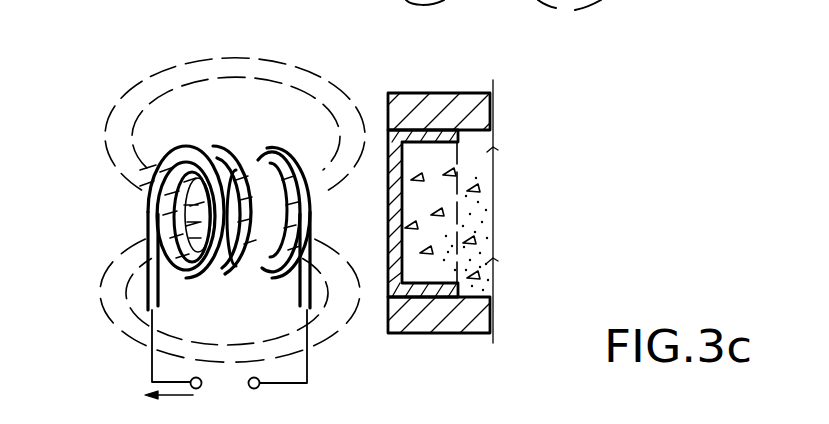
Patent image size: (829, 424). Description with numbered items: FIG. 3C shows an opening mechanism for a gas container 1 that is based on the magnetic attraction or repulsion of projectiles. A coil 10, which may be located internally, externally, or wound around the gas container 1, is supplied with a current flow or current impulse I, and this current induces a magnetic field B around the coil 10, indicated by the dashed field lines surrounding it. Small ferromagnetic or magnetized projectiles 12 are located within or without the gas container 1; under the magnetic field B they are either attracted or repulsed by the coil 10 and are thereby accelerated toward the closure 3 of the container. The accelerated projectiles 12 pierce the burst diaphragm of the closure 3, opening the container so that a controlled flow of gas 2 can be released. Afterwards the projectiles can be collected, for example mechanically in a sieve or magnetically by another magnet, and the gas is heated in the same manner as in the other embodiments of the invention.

The base member 1 is at (475, 315).
The gas 2 is at (481, 221).
The closure 3 is at (389, 286).
The coil 10 is at (247, 147).
The projectiles 12 is at (457, 172).
The magnetic field B is at (131, 82).
The current flow or current impulse I is at (161, 391).